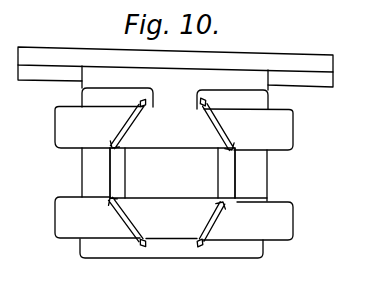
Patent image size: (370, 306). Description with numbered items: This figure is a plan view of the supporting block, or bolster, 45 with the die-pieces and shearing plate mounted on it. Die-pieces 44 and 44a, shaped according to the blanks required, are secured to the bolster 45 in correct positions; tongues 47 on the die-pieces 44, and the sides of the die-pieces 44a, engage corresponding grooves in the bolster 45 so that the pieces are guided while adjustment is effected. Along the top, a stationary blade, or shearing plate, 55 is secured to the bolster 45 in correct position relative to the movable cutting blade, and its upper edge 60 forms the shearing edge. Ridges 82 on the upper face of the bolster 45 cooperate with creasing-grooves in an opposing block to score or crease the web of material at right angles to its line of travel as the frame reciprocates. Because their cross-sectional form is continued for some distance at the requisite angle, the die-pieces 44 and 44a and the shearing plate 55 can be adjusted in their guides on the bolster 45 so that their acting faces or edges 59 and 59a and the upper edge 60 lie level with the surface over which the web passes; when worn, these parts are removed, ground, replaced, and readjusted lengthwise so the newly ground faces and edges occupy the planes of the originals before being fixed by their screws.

The upper edge 60 is at (175, 59).
The stationary blade, or shearing plate 55 is at (175, 76).
The block, or bolster 45 is at (174, 166).
The die-pieces 44 is at (58, 118).
The acting faces, or edges 59 is at (166, 179).
The tongues 47 is at (133, 133).
The ridges 82 is at (203, 198).
The die-pieces 44a is at (112, 173).
The acting faces, or edges 59a is at (122, 163).